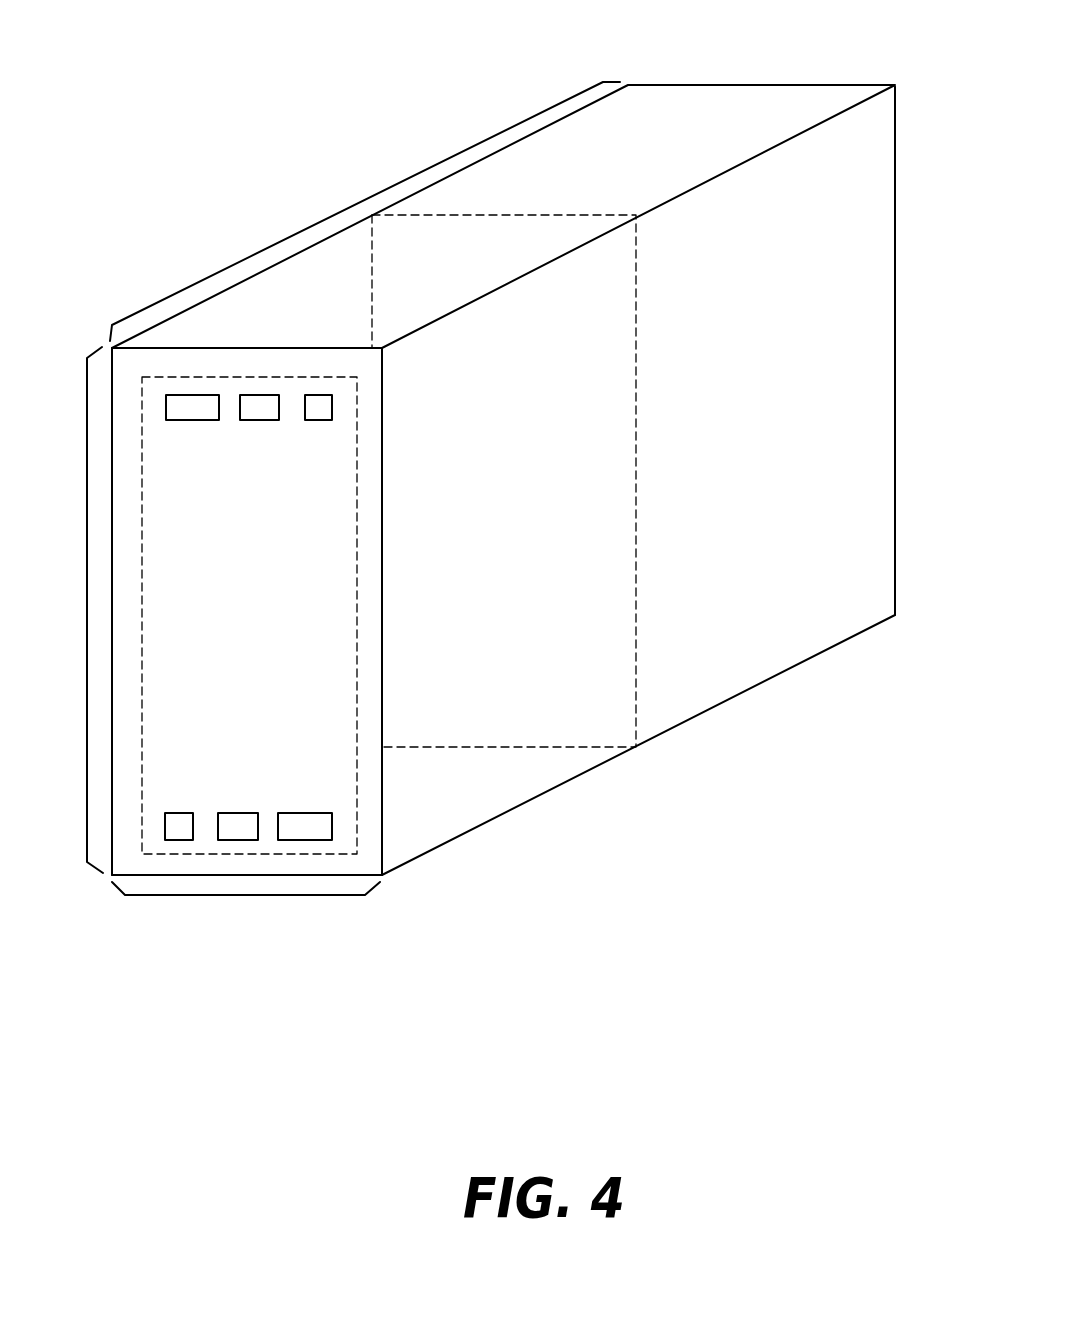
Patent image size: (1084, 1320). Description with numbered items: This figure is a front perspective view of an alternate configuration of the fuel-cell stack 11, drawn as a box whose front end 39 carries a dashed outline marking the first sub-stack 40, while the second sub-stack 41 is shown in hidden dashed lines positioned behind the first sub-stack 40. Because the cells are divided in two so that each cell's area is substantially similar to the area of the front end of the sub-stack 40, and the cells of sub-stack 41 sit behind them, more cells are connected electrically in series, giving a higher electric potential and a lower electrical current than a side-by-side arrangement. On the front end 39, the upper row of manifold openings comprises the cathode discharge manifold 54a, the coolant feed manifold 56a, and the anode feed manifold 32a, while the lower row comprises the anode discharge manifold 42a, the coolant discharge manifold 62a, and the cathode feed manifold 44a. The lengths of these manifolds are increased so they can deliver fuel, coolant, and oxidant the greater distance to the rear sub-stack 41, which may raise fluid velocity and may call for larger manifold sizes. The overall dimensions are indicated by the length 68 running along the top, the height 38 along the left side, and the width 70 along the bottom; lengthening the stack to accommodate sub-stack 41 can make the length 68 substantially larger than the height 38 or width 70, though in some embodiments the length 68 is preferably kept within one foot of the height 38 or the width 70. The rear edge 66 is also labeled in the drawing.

The fuel-cell stack 11 is at (136, 61).
The length 68 is at (373, 195).
The height 38 is at (88, 561).
The width 70 is at (253, 897).
The front end 39 is at (370, 721).
The first sub-stack 40 is at (358, 421).
The second sub-stack 41 is at (637, 448).
The rear edge 66 is at (896, 447).
The cathode discharge manifold 54a is at (203, 395).
The coolant feed manifold 56a is at (265, 395).
The anode feed manifold 32a is at (322, 395).
The anode discharge manifold 42a is at (177, 813).
The coolant discharge manifold 62a is at (232, 813).
The cathode feed manifold 44a is at (297, 813).